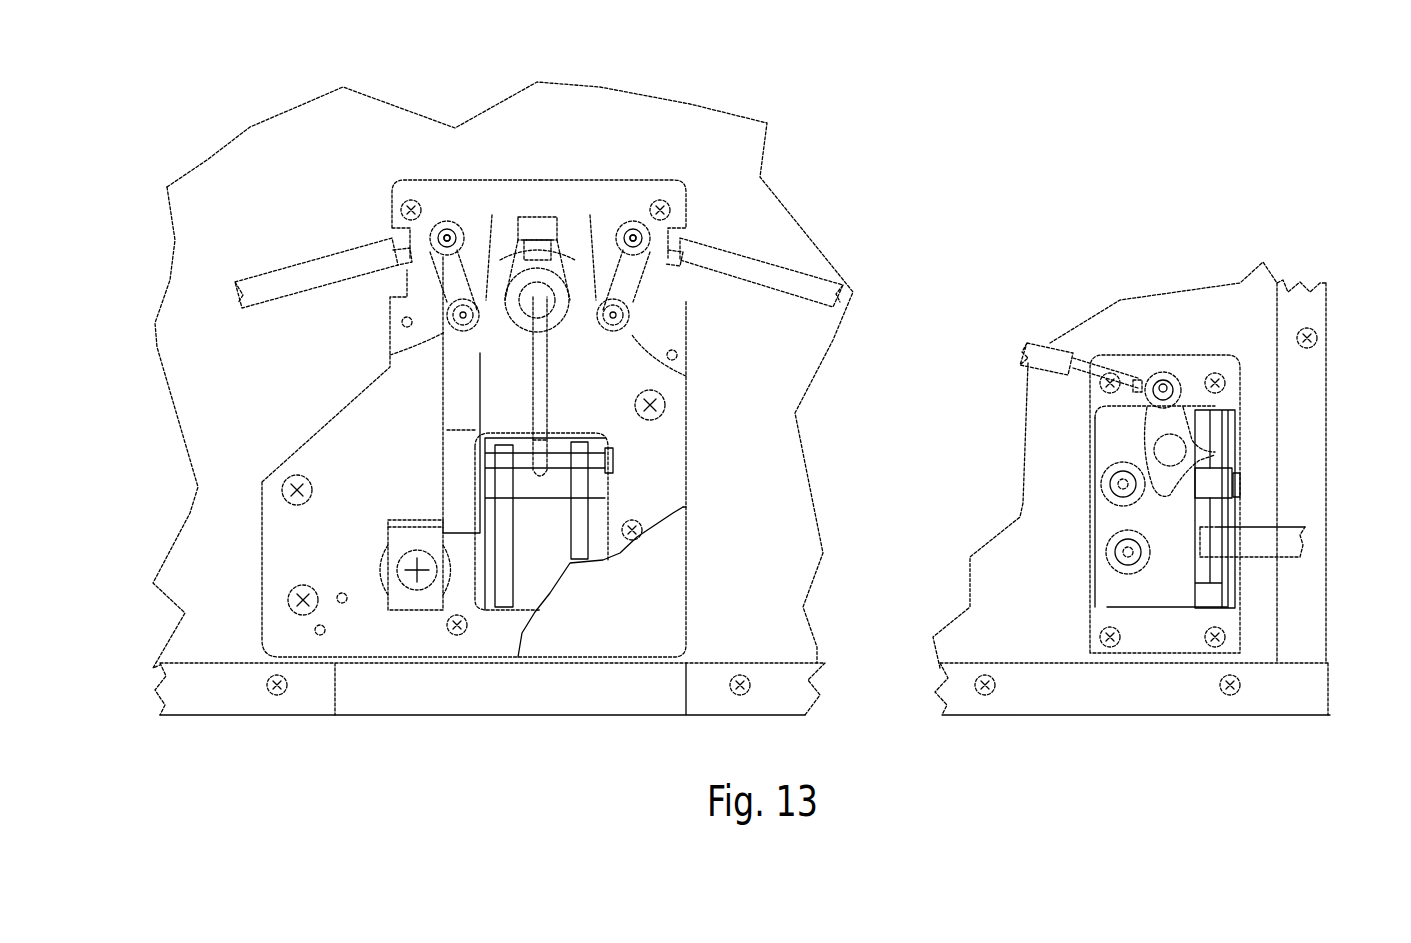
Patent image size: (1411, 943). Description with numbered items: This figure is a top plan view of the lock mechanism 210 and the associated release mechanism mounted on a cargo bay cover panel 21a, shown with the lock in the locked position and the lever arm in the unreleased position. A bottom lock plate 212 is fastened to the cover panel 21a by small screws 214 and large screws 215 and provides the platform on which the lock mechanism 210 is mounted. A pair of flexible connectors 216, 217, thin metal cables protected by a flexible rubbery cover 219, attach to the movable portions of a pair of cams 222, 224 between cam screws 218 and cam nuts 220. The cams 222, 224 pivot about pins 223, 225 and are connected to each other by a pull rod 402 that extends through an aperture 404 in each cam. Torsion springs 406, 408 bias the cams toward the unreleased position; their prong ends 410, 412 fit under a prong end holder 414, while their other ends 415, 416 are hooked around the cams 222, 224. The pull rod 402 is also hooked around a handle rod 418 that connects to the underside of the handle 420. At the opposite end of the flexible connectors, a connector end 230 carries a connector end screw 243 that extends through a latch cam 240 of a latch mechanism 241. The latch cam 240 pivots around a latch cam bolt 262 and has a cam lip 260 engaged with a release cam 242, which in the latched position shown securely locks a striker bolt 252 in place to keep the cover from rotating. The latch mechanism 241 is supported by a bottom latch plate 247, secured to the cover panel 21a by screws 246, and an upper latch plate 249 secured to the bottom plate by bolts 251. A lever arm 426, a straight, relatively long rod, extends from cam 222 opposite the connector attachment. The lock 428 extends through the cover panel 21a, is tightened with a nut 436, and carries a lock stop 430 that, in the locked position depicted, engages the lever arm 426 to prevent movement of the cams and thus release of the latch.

The cover panel 21a is at (558, 108).
The lock mechanism 210 is at (283, 401).
The bottom lock plate 212 is at (262, 633).
The small screws 214 is at (683, 507).
The large screws 215 is at (392, 187).
The flexible connector 216 is at (755, 228).
The flexible connector 217 is at (312, 235).
The cam screws 218 is at (440, 228).
The flexible rubbery cover 219 is at (258, 282).
The cam nuts 220 is at (447, 236).
The cam 222 is at (420, 280).
The pin 223 is at (462, 317).
The cam 224 is at (645, 278).
The pin 225 is at (675, 376).
The connector end 230 is at (1103, 343).
The latch cam 240 is at (1178, 412).
The latch mechanism 241 is at (1070, 590).
The release cam 242 is at (1218, 420).
The connector end screw 243 is at (1160, 375).
The screws 246 is at (1225, 378).
The bottom latch plate 247 is at (1175, 643).
The upper latch plate 249 is at (1100, 522).
The bolts 251 is at (1108, 485).
The striker bolt 252 is at (1285, 545).
The cam lip 260 is at (1170, 450).
The latch cam bolt 262 is at (1210, 440).
The pull rod 402 is at (530, 404).
The aperture 404 is at (548, 314).
The torsion spring 406 is at (440, 358).
The torsion spring 408 is at (655, 330).
The prong end 410 is at (533, 215).
The prong end 412 is at (563, 238).
The prong end holder 414 is at (555, 236).
The spring end 415 is at (490, 243).
The spring end 416 is at (600, 258).
The handle rod 418 is at (558, 440).
The handle 420 is at (543, 527).
The lever arm 426 is at (445, 440).
The lock 428 is at (375, 560).
The lock stop 430 is at (388, 525).
The nut 436 is at (380, 590).